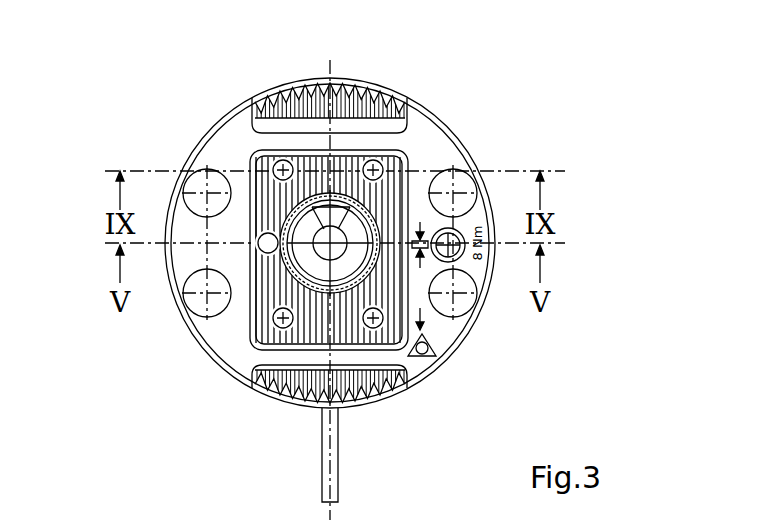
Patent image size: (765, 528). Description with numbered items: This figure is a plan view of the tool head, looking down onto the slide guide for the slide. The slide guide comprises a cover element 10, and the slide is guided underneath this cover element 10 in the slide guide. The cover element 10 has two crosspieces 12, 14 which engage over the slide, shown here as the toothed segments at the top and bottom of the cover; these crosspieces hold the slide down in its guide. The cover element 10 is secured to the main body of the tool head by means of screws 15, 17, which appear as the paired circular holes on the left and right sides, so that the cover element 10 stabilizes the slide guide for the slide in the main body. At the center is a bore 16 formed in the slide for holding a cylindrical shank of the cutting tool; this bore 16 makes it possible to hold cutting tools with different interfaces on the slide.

The cover element 10 is at (233, 357).
The crosspiece 12 is at (286, 138).
The crosspiece 14 is at (297, 352).
The screw 15 is at (197, 207).
The bore 16 is at (340, 236).
The screw 17 is at (465, 207).